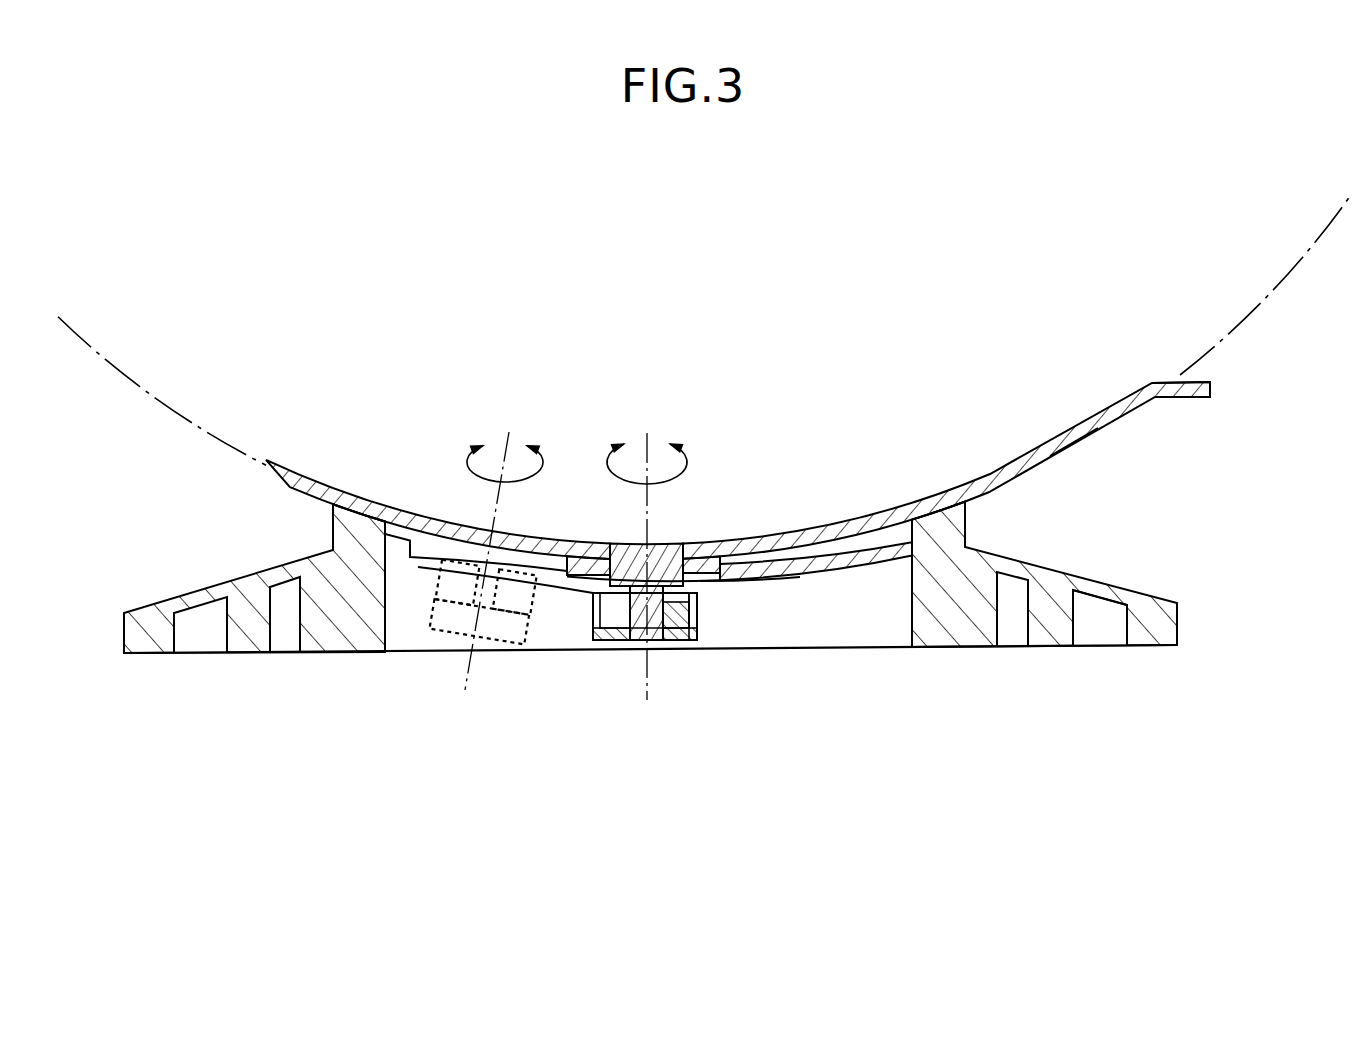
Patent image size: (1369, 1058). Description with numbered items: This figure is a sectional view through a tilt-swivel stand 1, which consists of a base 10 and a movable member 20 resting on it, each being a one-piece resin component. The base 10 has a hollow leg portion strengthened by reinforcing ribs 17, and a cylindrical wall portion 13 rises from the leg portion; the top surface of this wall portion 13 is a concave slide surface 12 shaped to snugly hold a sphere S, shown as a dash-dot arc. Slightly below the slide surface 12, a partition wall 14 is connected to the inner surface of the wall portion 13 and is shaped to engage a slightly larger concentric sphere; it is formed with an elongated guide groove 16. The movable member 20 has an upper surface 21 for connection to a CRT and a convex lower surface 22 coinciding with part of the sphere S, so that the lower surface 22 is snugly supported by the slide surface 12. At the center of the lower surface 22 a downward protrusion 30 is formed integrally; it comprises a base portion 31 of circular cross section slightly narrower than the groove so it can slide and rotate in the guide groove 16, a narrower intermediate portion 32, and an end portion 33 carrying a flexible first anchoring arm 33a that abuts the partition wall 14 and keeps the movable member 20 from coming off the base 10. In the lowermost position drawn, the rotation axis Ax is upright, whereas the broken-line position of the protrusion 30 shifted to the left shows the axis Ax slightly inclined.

The stand 1 is at (946, 456).
The base 10 is at (1130, 590).
The slide surface 12 is at (362, 490).
The wall portion 13 is at (968, 522).
The partition wall 14 is at (803, 560).
The guide groove 16 is at (748, 582).
The reinforcing ribs 17 is at (1098, 632).
The movable member 20 is at (390, 493).
The upper surface 21 is at (1162, 380).
The lower surface 22 is at (1098, 425).
The protrusion 30 is at (491, 650).
The base portion 31 is at (672, 547).
The intermediate portion 32 is at (683, 612).
The end portion 33 is at (610, 648).
The first anchoring arm 33a is at (700, 618).
The sphere S is at (1245, 322).
The rotation axis Ax is at (576, 540).